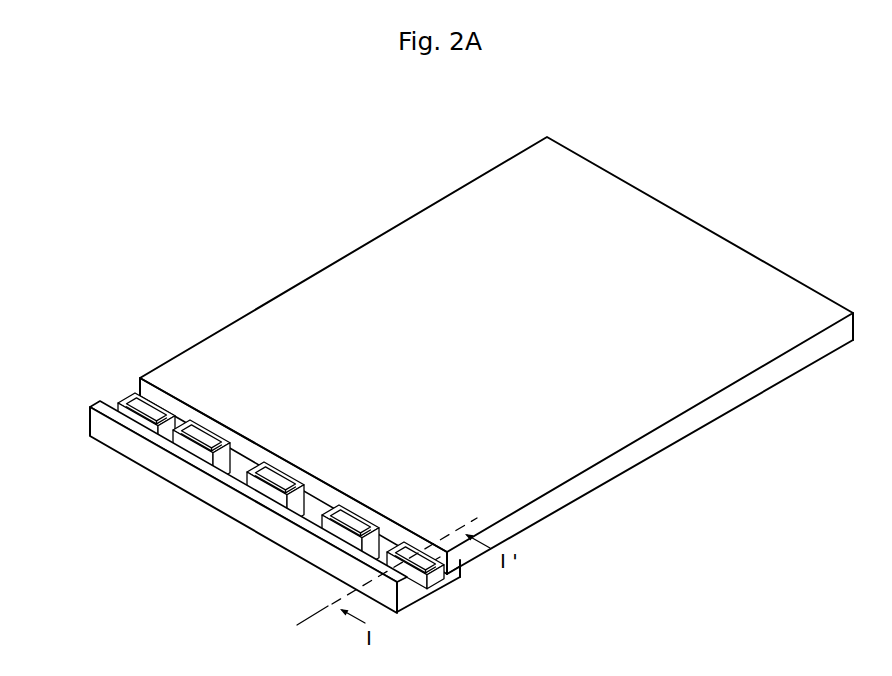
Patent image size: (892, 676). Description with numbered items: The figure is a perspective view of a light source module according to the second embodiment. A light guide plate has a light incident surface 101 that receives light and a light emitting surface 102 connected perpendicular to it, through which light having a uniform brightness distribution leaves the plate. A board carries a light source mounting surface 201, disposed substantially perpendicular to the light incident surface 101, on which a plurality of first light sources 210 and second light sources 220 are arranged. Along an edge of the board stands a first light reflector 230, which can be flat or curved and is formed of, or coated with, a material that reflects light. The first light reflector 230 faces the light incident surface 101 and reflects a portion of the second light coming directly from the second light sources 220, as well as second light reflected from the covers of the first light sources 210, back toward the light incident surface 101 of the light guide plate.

The light incident surface 101 is at (182, 412).
The light emitting surface 102 is at (457, 204).
The light source mounting surface 201 is at (420, 587).
The first light sources 210 is at (215, 428).
The second light sources 220 is at (120, 391).
The first light reflector 230 is at (95, 423).